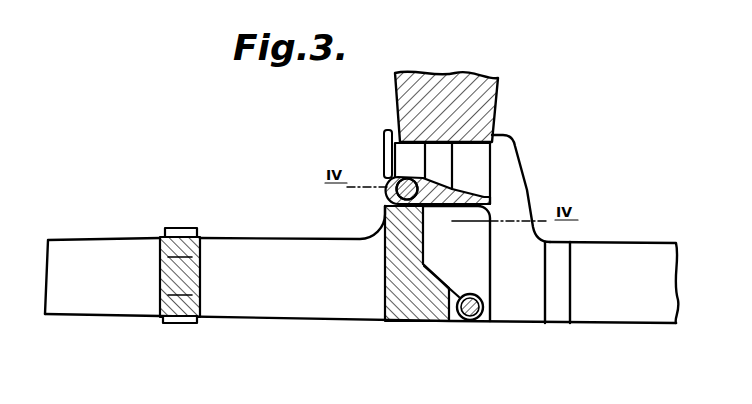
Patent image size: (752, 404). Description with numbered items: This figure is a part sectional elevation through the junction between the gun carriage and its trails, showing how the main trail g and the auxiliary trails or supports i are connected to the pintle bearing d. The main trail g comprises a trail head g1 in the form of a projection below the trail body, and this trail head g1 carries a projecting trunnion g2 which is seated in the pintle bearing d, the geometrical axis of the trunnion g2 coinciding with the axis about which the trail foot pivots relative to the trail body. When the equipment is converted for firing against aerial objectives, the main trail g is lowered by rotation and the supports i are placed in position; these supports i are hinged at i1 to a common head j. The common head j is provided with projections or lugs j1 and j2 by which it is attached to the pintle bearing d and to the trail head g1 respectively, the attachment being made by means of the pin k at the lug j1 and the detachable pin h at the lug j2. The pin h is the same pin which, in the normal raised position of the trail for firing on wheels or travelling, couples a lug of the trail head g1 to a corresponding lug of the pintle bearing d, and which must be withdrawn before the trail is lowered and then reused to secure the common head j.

The pintle bearing d is at (495, 90).
The main trail g is at (648, 247).
The trail head g1 is at (513, 178).
The trunnion g2 is at (487, 149).
The detachable pin h is at (469, 322).
The auxiliary trail i is at (105, 246).
The hinge i1 is at (189, 225).
The common head j is at (257, 247).
The lug j1 is at (385, 207).
The lug j2 is at (460, 287).
The pin k is at (390, 185).